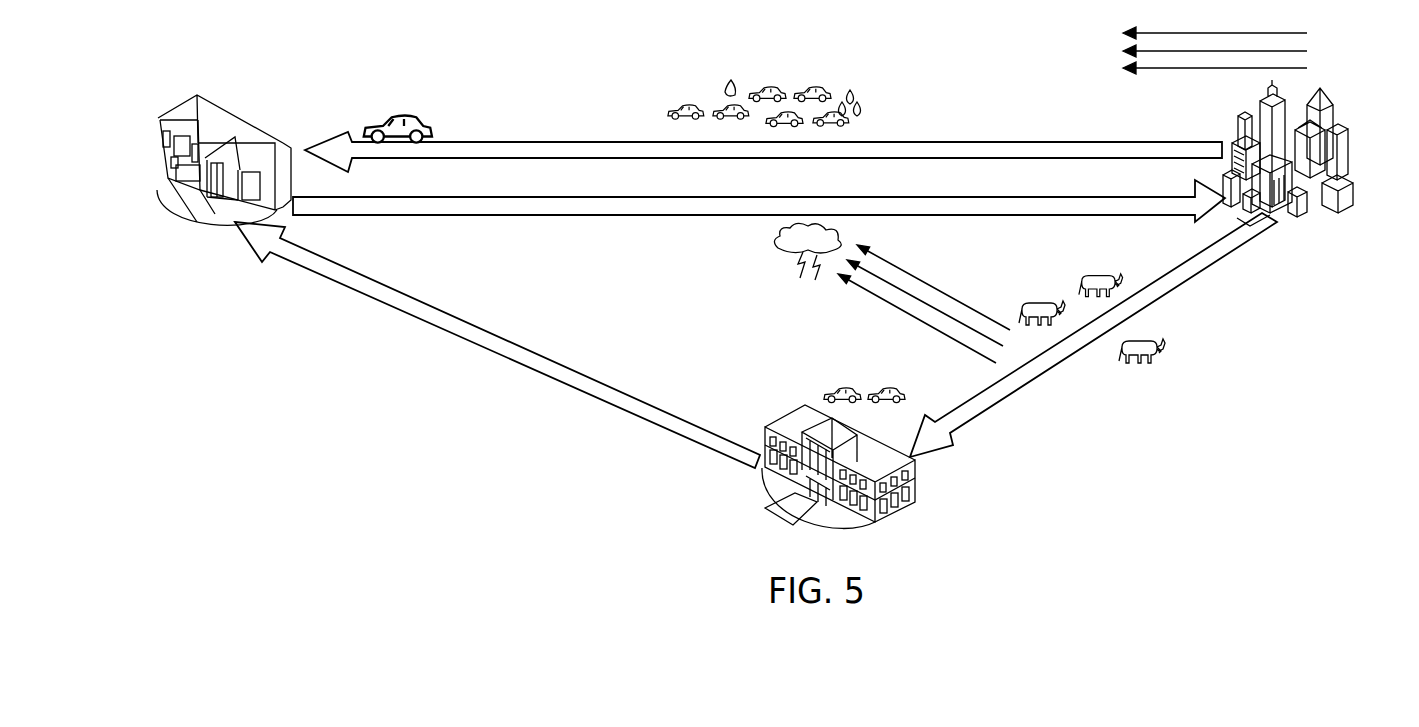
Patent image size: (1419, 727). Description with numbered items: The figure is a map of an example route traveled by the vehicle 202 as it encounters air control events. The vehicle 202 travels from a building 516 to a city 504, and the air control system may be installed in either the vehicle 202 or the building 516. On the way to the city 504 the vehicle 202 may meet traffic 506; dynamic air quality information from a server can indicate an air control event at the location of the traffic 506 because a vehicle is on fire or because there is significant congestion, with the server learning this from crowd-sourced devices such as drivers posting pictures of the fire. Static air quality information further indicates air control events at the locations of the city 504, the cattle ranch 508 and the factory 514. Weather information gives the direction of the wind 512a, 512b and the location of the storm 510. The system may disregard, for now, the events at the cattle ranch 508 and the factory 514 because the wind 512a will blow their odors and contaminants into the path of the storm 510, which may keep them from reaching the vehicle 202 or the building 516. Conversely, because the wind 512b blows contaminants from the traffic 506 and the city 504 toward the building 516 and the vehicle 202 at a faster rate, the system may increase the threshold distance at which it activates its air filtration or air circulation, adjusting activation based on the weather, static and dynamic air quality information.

The vehicle 202 is at (424, 124).
The city 504 is at (1350, 142).
The traffic 506 is at (735, 82).
The cattle ranch 508 is at (1148, 337).
The storm 510 is at (772, 250).
The wind 512a is at (895, 312).
The wind 512b is at (1218, 65).
The factory 514 is at (917, 480).
The building 516 is at (167, 152).